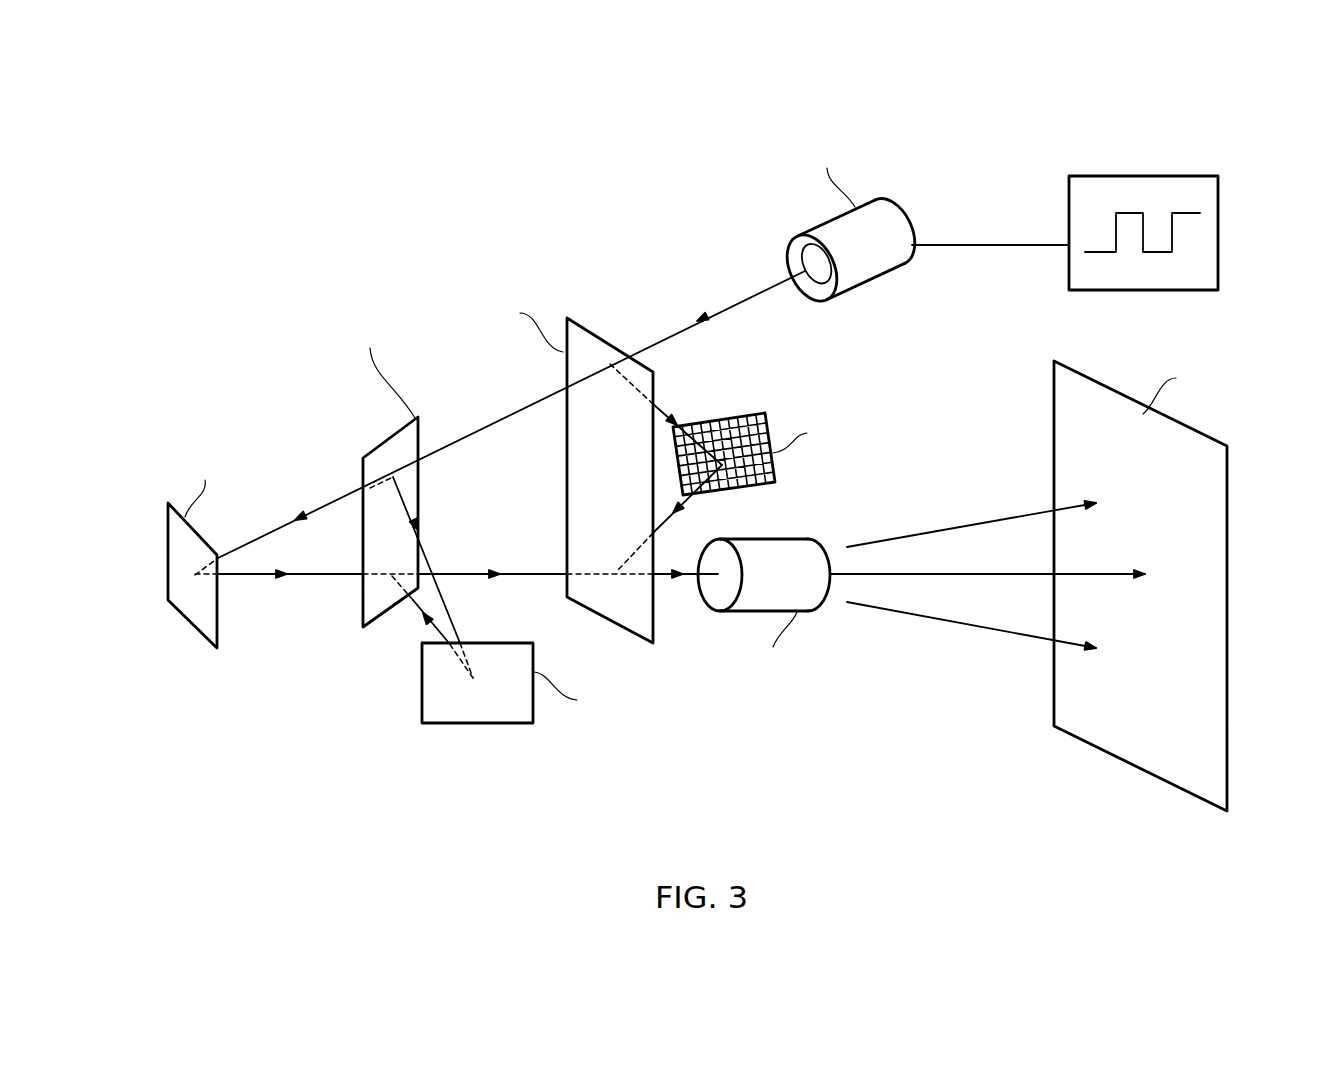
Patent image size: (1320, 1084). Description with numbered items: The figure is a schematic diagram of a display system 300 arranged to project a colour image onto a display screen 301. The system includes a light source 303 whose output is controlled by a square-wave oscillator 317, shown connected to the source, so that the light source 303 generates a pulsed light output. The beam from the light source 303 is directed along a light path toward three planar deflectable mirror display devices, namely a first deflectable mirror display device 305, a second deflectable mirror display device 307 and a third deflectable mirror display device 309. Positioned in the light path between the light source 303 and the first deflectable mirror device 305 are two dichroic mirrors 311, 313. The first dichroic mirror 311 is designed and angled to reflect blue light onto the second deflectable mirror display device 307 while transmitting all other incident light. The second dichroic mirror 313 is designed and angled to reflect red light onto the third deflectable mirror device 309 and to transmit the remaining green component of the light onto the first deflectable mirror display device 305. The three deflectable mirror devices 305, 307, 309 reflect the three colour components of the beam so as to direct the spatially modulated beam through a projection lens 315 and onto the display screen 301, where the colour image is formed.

The display system 300 is at (322, 250).
The display screen 301 is at (1058, 709).
The light source 303 is at (910, 222).
The first planar deflectable mirror display device 305 is at (195, 633).
The second planar deflectable mirror display device 307 is at (748, 412).
The third planar deflectable mirror display device 309 is at (482, 727).
The first dichroic mirror 311 is at (658, 388).
The second dichroic mirror 313 is at (368, 450).
The projection lens 315 is at (793, 540).
The square-wave oscillator 317 is at (1182, 176).